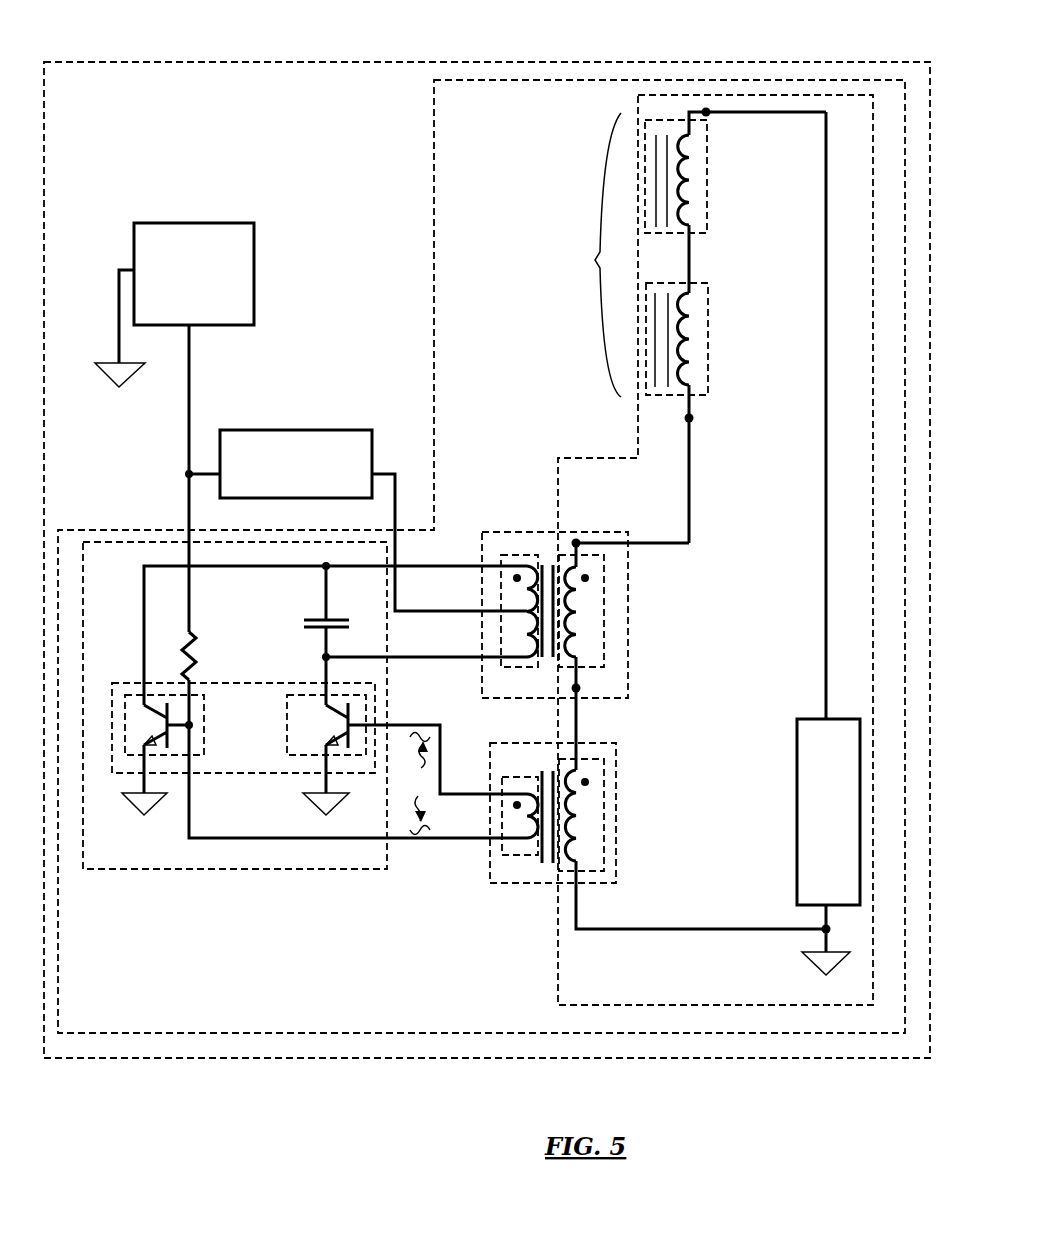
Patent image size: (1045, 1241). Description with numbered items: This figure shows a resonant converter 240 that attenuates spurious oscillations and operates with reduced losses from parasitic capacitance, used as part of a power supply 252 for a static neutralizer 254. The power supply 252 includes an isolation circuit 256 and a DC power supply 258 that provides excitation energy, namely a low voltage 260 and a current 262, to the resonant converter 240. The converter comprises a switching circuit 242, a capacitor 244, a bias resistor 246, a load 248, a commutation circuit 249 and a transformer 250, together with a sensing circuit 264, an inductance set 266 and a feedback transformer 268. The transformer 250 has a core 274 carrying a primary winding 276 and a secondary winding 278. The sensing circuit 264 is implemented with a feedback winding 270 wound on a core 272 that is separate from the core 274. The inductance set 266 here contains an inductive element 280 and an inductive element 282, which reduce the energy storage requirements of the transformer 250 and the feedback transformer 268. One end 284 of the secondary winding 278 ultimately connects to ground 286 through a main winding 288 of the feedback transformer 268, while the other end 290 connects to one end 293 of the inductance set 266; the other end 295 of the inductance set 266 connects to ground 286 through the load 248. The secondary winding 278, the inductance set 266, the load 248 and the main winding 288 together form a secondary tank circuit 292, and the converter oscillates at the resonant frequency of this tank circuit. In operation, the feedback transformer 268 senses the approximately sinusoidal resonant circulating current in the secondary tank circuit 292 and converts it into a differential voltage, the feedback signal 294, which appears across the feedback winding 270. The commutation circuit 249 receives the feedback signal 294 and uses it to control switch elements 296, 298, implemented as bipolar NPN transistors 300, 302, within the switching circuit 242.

The resonant converter 240 is at (434, 183).
The switching circuit 242 is at (245, 774).
The capacitor 244 is at (316, 620).
The bias resistor 246 is at (193, 646).
The load 248 is at (718, 532).
The commutation circuit 249 is at (108, 542).
The transformer 250 is at (564, 590).
The power supply 252 is at (67, 103).
The static neutralizer 254 is at (642, 40).
The isolation circuit 256 is at (358, 520).
The DC power supply 258 is at (194, 274).
The low voltage 260 is at (161, 419).
The current 262 is at (208, 413).
The sensing circuit 264 is at (502, 828).
The inductance set 266 is at (661, 255).
The feedback transformer 268 is at (552, 838).
The feedback winding 270 is at (514, 851).
The core 272 is at (542, 870).
The core 274 is at (546, 551).
The primary winding 276 is at (512, 668).
The secondary winding 278 is at (604, 654).
The inductive element 280 is at (708, 284).
The inductive element 282 is at (708, 217).
The end 284 is at (573, 691).
The ground 286 is at (116, 389).
The main winding 288 is at (597, 871).
The end 290 is at (579, 540).
The secondary tank circuit 292 is at (582, 457).
The end 293 is at (692, 417).
The feedback signal 294 is at (419, 784).
The end 295 is at (709, 116).
The switch element 296 is at (204, 739).
The switch element 298 is at (286, 722).
The bipolar NPN transistor 300 is at (144, 706).
The bipolar NPN transistor 302 is at (314, 704).